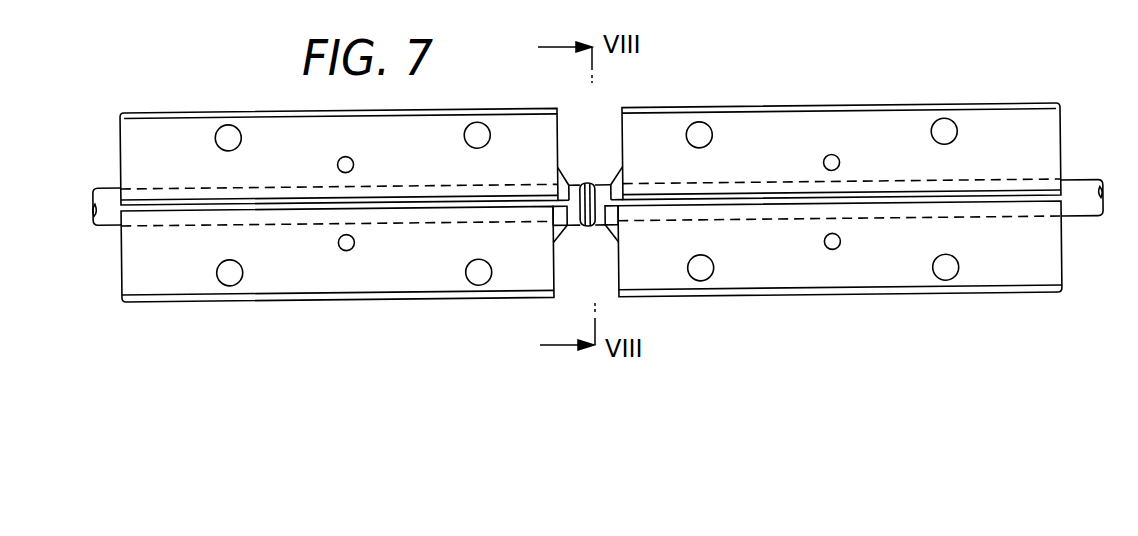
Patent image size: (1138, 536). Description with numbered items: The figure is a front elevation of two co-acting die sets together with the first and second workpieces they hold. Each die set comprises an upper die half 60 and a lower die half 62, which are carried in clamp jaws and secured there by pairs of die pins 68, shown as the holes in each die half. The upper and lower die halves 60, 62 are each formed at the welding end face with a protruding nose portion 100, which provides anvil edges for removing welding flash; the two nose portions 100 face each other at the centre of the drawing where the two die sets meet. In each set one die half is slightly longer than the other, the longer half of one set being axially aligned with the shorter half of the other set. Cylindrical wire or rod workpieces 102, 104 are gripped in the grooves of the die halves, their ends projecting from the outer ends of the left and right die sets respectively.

The upper die half 60 is at (176, 112).
The lower die half 62 is at (306, 276).
The die pins 68 is at (233, 124).
The nose portion 100 is at (616, 176).
The first workpiece 102 is at (105, 223).
The second workpiece 104 is at (1081, 207).